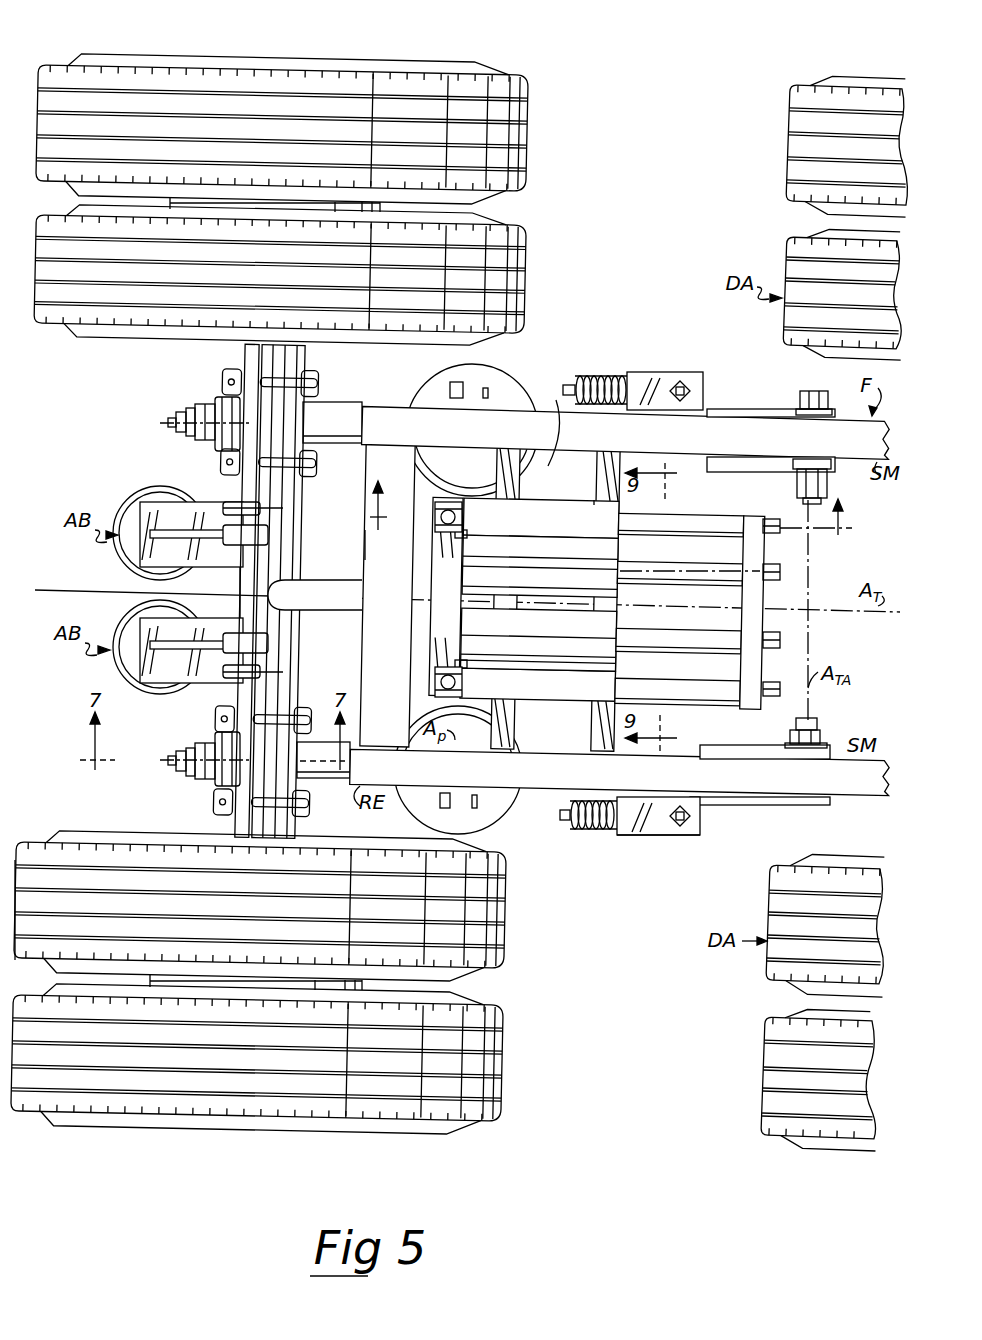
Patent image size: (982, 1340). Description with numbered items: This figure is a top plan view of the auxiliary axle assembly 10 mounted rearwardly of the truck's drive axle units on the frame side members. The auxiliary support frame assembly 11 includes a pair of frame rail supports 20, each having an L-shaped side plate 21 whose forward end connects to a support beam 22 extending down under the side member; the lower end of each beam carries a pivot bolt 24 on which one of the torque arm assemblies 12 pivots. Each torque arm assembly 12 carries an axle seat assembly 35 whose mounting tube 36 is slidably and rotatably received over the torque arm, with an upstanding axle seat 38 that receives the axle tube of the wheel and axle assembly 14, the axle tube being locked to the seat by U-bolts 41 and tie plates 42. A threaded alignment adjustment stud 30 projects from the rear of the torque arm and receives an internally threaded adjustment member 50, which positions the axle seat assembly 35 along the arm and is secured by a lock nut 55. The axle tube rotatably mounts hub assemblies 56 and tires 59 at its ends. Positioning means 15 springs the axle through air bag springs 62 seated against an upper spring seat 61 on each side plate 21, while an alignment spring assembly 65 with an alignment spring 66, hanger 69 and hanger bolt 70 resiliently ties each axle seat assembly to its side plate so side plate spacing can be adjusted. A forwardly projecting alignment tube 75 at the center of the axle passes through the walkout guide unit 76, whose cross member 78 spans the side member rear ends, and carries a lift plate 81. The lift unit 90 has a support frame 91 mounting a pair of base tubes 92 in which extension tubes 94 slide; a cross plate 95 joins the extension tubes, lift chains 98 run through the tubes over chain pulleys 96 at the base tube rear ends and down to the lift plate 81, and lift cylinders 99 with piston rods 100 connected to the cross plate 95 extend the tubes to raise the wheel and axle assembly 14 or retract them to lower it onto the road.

The auxiliary axle assembly 10 is at (570, 108).
The auxiliary support frame assembly 11 is at (660, 849).
The torque arm assemblies 12 is at (344, 404).
The wheel and axle assembly 14 is at (126, 821).
The positioning means 15 is at (546, 470).
The frame rail supports 20 is at (752, 407).
The side plate 21 is at (493, 408).
The support beam 22 is at (730, 470).
The pivot bolt 24 is at (812, 391).
The threaded alignment adjustment stud 30 is at (168, 423).
The axle seat assembly 35 is at (216, 439).
The mounting tube 36 is at (364, 435).
The axle seat 38 is at (329, 590).
The U-bolts 41 is at (312, 383).
The tie plates 42 is at (224, 372).
The adjustment member 50 is at (203, 404).
The lock nut 55 is at (190, 408).
The hub assemblies 56 is at (356, 213).
The tires 59 is at (524, 222).
The upper spring seat 61 is at (440, 476).
The air bag spring 62 is at (492, 812).
The alignment spring assembly 65 is at (596, 376).
The alignment spring 66 is at (600, 376).
The hanger 69 is at (645, 372).
The hanger bolt 70 is at (684, 382).
The alignment tube 75 is at (352, 586).
The walkout guide unit 76 is at (364, 555).
The cross member 78 is at (363, 524).
The lift plate 81 is at (433, 568).
The lift unit 90 is at (598, 500).
The support frame 91 is at (605, 468).
The base tubes 92 is at (541, 533).
The extension tubes 94 is at (717, 512).
The cross plate 95 is at (758, 597).
The chain pulleys 96 is at (462, 538).
The lift chains 98 is at (436, 520).
The lift cylinders 99 is at (533, 576).
The piston rods 100 is at (696, 638).